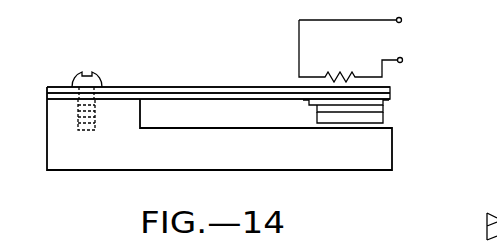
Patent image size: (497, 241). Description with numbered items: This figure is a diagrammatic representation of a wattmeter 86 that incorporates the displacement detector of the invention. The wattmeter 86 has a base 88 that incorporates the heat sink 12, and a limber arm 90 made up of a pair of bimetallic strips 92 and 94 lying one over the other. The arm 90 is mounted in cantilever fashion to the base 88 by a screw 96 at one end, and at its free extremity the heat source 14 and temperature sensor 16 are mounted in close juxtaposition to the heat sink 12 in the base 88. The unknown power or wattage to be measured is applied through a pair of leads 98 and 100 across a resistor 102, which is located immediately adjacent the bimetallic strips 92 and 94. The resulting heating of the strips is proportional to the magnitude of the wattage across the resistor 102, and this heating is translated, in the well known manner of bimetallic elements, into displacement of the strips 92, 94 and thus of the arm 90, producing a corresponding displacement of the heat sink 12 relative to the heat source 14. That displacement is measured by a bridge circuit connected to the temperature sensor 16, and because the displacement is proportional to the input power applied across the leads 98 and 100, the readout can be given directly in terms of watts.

The heat sink 12 is at (392, 131).
The heat source 14 is at (316, 120).
The temperature sensor 16 is at (385, 114).
The wattmeter 86 is at (71, 76).
The base 88 is at (306, 176).
The limber arm 90 is at (257, 78).
The bimetallic strip 92 is at (393, 88).
The bimetallic strip 94 is at (388, 103).
The screw 96 is at (74, 82).
The lead 98 is at (402, 19).
The lead 100 is at (403, 58).
The resistor 102 is at (336, 71).